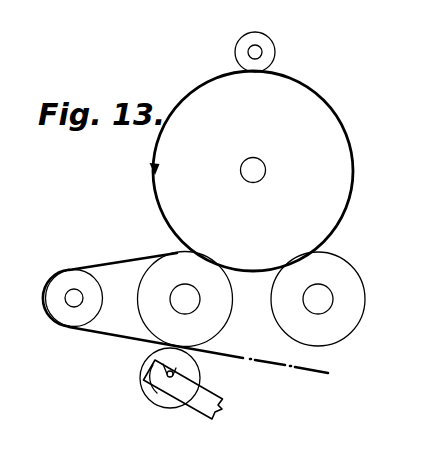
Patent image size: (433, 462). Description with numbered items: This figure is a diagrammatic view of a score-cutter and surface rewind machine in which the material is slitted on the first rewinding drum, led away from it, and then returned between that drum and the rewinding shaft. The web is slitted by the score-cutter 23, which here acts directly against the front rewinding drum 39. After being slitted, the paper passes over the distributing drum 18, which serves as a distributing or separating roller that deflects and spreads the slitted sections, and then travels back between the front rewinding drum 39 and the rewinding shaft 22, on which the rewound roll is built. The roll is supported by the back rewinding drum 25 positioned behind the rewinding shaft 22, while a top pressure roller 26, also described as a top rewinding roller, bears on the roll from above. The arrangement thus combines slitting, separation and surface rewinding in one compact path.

The distributing roller 18 is at (58, 283).
The rewinding shaft 22 is at (259, 167).
The score-cutter 23 is at (157, 401).
The back rewinding drum 25 is at (353, 284).
The top pressure roller 26 is at (269, 49).
The front rewinding drum 39 is at (218, 313).